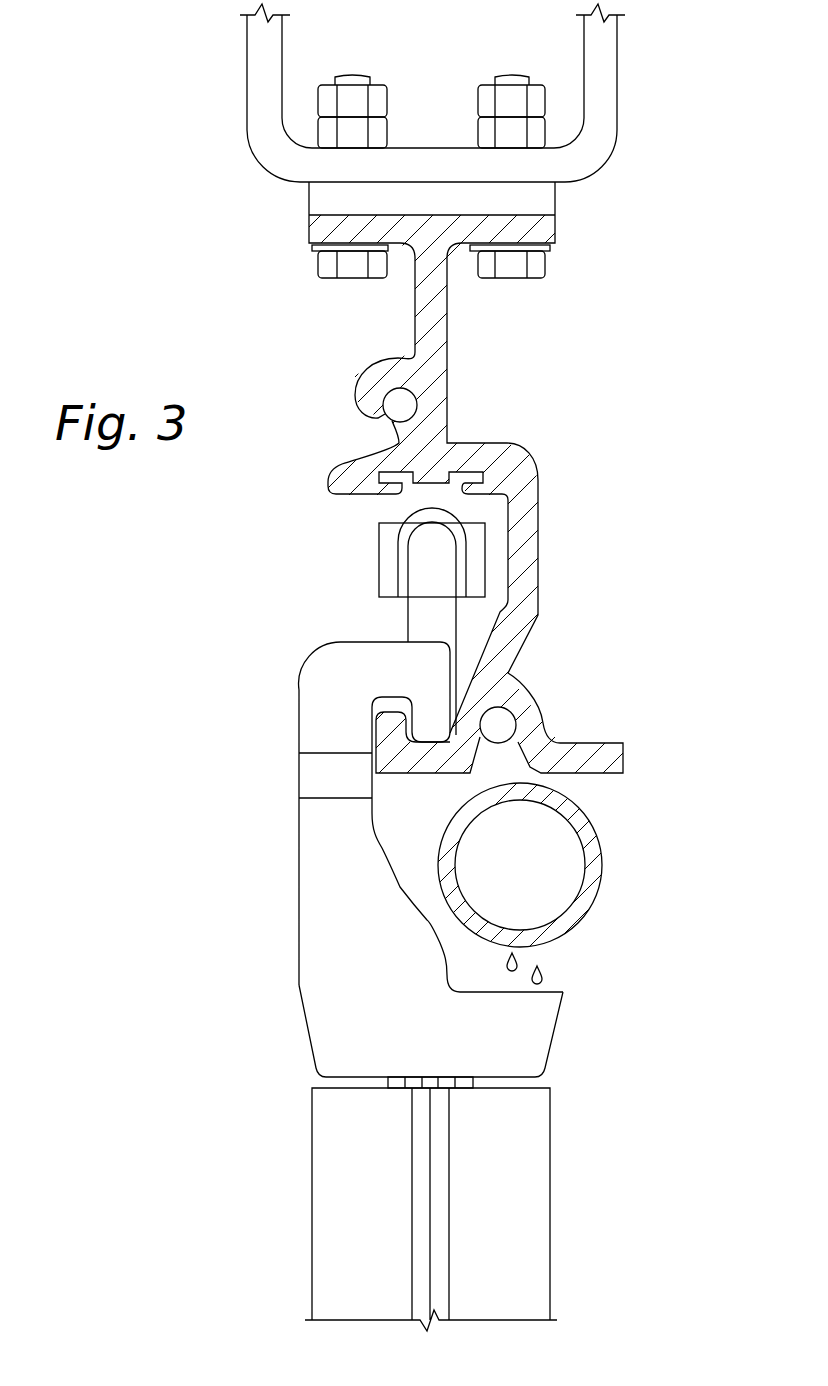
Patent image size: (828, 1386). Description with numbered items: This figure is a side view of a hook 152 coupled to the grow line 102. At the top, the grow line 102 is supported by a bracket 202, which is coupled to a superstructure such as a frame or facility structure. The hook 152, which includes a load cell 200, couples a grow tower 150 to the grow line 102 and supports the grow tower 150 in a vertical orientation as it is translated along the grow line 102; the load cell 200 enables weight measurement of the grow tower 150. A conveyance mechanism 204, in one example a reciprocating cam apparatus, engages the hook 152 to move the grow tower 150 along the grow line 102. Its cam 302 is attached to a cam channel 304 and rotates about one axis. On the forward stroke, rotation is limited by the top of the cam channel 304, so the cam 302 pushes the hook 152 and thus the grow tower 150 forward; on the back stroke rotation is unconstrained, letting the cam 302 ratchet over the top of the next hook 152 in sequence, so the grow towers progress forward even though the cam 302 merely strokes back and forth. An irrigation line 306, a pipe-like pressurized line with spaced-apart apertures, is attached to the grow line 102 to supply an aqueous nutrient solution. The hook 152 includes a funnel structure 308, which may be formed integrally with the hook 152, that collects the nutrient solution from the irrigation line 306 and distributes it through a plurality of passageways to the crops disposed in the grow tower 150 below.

The bracket 202 is at (617, 70).
The grow line 102 is at (538, 512).
The conveyance mechanism 204 is at (376, 614).
The cam channel 304 is at (398, 575).
The cam 302 is at (408, 617).
The load cell 200 is at (298, 772).
The hook 152 is at (298, 948).
The irrigation line 306 is at (602, 862).
The funnel structure 308 is at (558, 1037).
The grow tower 150 is at (550, 1192).